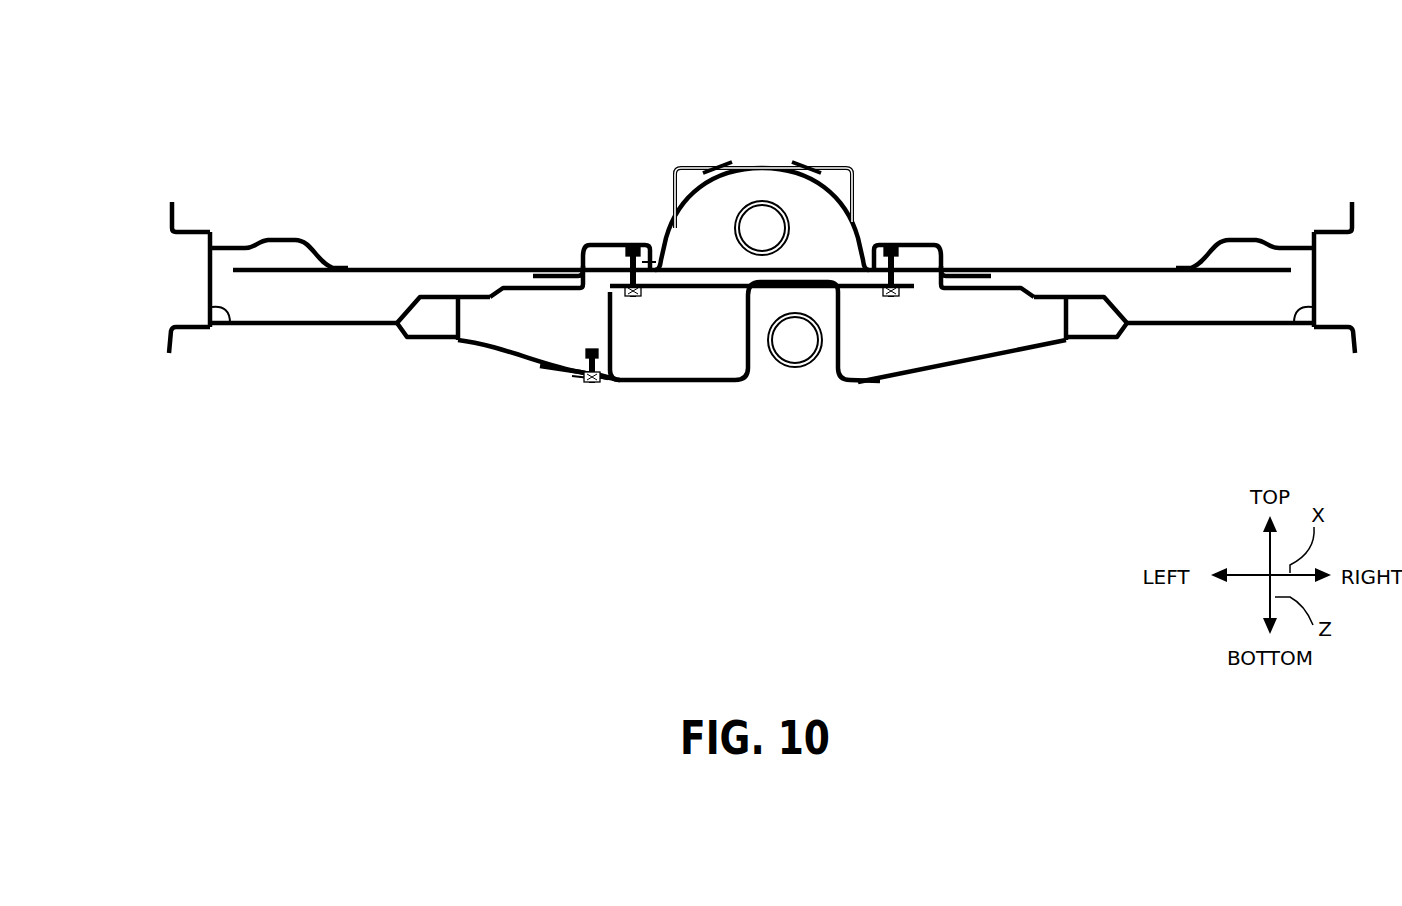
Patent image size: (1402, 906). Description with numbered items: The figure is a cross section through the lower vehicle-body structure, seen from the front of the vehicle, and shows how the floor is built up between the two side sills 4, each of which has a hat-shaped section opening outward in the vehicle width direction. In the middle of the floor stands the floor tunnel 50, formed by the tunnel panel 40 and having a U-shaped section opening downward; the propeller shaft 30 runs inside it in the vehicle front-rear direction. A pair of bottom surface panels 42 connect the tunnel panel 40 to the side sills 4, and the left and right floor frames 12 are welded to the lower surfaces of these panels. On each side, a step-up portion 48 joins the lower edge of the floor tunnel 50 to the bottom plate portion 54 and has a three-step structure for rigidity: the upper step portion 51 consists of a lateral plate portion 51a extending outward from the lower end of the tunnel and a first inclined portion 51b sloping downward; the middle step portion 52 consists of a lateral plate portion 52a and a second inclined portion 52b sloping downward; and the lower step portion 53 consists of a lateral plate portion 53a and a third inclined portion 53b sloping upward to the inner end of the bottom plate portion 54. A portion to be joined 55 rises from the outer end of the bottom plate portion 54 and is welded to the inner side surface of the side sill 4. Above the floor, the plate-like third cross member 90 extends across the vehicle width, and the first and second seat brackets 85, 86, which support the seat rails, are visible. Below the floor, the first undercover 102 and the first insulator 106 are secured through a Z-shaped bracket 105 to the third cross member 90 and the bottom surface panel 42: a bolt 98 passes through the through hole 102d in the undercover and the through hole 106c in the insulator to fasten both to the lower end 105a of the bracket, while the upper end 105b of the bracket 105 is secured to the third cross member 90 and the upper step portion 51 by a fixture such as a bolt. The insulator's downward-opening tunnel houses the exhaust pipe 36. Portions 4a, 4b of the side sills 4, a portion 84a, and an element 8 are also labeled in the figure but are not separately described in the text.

The side sill 4 is at (165, 248).
The lower flange of frame member 4a is at (196, 327).
The upper flange of frame member 4b is at (196, 232).
The fastening tab 8 is at (703, 168).
The floor frame 12 is at (492, 356).
The propeller shaft 30 is at (740, 168).
The exhaust pipe 36 is at (796, 368).
The tunnel panel 40 is at (764, 156).
The bottom surface panel 42 is at (276, 380).
The step-up portion 48 is at (490, 138).
The floor tunnel 50 is at (785, 166).
The upper step portion 51 is at (762, 210).
The lateral plate portion 51a is at (761, 227).
The first inclined portion 51b is at (552, 274).
The middle step portion 52 is at (763, 221).
The lateral plate portion 52a is at (520, 286).
The second inclined portion 52b is at (468, 292).
The lower step portion 53 is at (762, 369).
The lateral plate portion 53a is at (450, 345).
The third inclined portion 53b is at (495, 396).
The bottom plate portion 54 is at (318, 330).
The portion to be joined 55 is at (232, 330).
The upper plate 84a is at (386, 268).
The first seat bracket 85 is at (631, 247).
The second seat bracket 86 is at (282, 240).
The third cross member 90 is at (736, 300).
The bolt 98 is at (595, 386).
The first undercover 102 is at (561, 425).
The securing through hole 102d is at (582, 376).
The Z-shaped bracket 105 is at (672, 279).
The lower end 105a is at (604, 366).
The upper end 105b is at (650, 254).
The first insulator 106 is at (764, 383).
The securing through hole 106c is at (606, 372).